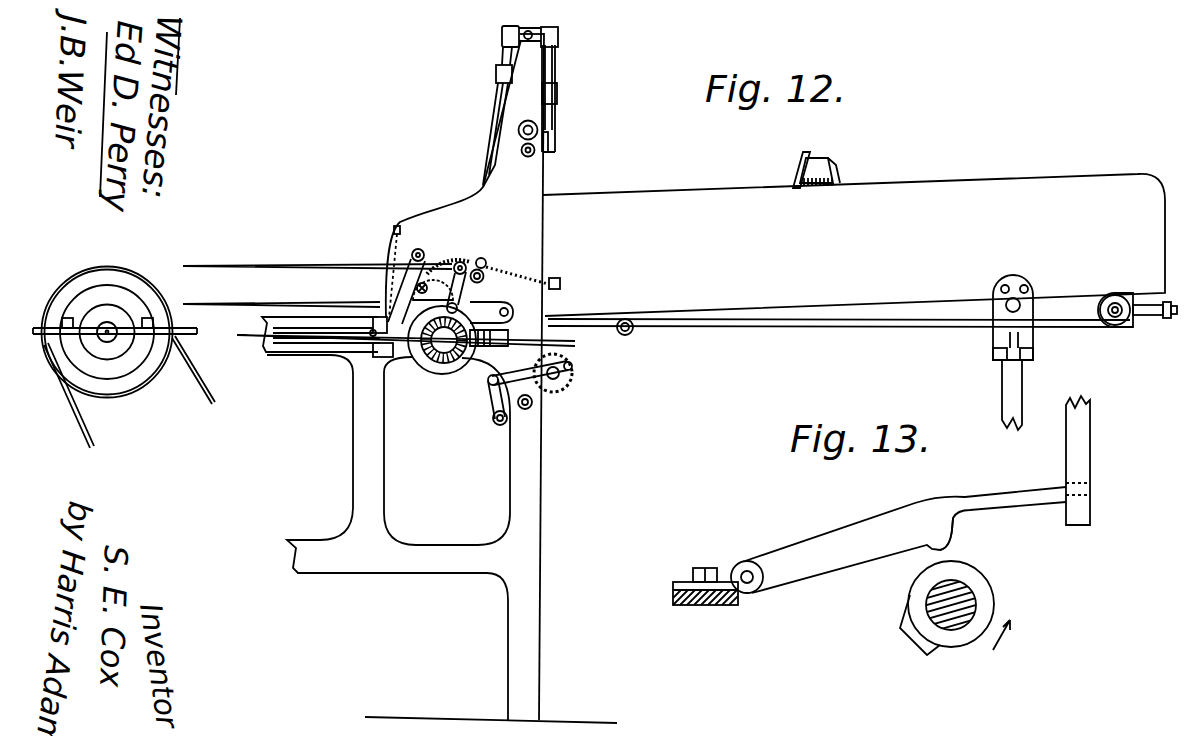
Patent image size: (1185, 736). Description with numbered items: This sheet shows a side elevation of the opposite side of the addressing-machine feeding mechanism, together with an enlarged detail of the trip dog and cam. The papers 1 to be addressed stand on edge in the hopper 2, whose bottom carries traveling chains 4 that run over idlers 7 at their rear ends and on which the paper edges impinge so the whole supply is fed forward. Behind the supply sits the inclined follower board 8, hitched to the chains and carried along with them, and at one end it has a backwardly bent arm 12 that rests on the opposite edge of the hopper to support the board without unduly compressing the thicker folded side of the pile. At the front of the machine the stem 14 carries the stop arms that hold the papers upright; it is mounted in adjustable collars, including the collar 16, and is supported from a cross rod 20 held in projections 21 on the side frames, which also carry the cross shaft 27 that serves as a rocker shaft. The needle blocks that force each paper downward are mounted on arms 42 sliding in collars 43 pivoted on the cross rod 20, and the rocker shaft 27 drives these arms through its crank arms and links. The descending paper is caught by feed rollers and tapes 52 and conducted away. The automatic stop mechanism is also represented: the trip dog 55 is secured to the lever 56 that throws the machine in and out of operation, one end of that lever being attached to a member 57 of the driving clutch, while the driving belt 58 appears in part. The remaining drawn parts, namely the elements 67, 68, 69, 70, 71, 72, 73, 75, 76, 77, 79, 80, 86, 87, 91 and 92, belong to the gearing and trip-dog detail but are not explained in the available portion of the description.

In FIG. 12, the papers 1 is at (817, 188).
In FIG. 12, the hopper 2 is at (938, 187).
In FIG. 12, the traveling chains 4 is at (775, 324).
In FIG. 12, the idlers 7 is at (1114, 328).
In FIG. 12, the follower board 8 is at (796, 168).
In FIG. 12, the arm 12 is at (832, 175).
In FIG. 12, the stem 14 is at (550, 124).
In FIG. 12, the collar 16 is at (557, 106).
In FIG. 12, the cross rod 20 is at (555, 46).
In FIG. 12, the projections 21 is at (522, 80).
In FIG. 12, the cross shaft 27 is at (518, 130).
In FIG. 12, the arms 42 is at (499, 100).
In FIG. 12, the collars 43 is at (503, 30).
In FIG. 12, the tapes 52 is at (306, 261).
In FIG. 12, the trip dog 55 is at (387, 317).
In FIG. 13, the trip dog 55 is at (860, 528).
In FIG. 12, the lever 56 is at (250, 378).
In FIG. 13, the lever 56 is at (715, 602).
In FIG. 12, the clutch member 57 is at (125, 380).
In FIG. 12, the driving belt 58 is at (83, 440).
In FIG. 12, the rod 67 is at (397, 287).
In FIG. 13, the rod 67 is at (1075, 460).
In FIG. 12, the casing 68 is at (404, 358).
In FIG. 13, the shoulder 69 is at (953, 530).
In FIG. 12, the sleeve 70 is at (302, 345).
In FIG. 13, the sleeve 70 is at (958, 612).
In FIG. 13, the lug 71 is at (928, 656).
In FIG. 12, the link 72 is at (458, 352).
In FIG. 12, the gear 73 is at (443, 365).
In FIG. 12, the pawl 75 is at (425, 246).
In FIG. 12, the rod 76 is at (387, 303).
In FIG. 12, the cam 77 is at (485, 307).
In FIG. 12, the spring anchor 79 is at (550, 278).
In FIG. 12, the pawl 80 is at (460, 262).
In FIG. 12, the spring 86 is at (484, 262).
In FIG. 12, the arm 87 is at (530, 308).
In FIG. 12, the rack 91 is at (397, 226).
In FIG. 12, the stud 92 is at (536, 157).